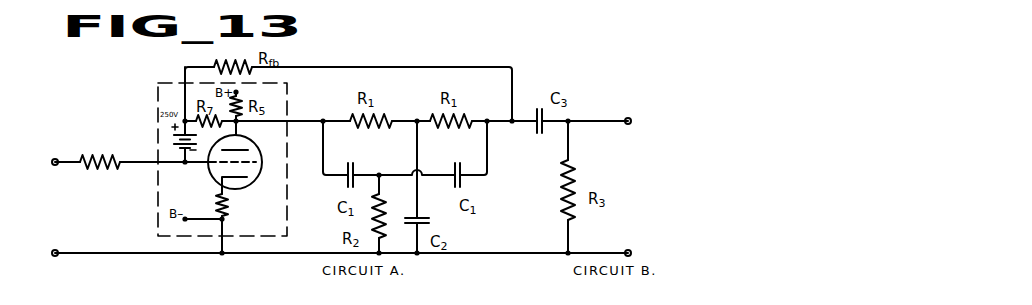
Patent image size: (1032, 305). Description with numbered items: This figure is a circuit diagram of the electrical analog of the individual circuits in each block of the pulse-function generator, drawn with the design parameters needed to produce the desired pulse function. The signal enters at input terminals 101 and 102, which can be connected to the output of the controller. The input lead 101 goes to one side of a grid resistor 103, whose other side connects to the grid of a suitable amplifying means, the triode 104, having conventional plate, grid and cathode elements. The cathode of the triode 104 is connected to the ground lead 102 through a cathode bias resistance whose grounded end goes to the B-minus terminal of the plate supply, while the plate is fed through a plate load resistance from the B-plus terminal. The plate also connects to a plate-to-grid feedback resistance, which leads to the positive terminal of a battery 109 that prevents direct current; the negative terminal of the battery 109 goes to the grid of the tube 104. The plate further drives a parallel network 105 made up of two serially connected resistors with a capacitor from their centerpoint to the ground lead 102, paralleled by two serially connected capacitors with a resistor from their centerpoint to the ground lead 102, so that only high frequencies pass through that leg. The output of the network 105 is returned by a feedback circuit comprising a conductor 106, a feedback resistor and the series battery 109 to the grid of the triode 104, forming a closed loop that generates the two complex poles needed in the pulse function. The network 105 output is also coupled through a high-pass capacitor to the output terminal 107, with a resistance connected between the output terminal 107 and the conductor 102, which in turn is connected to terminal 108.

The input terminal 101 is at (63, 157).
The input terminal 102 is at (63, 248).
The grid resistor 103 is at (101, 177).
The triode 104 is at (259, 183).
The parallel network 105 is at (331, 118).
The conductor 106 is at (400, 68).
The output terminal 107 is at (633, 110).
The terminal 108 is at (633, 243).
The battery 109 is at (172, 141).